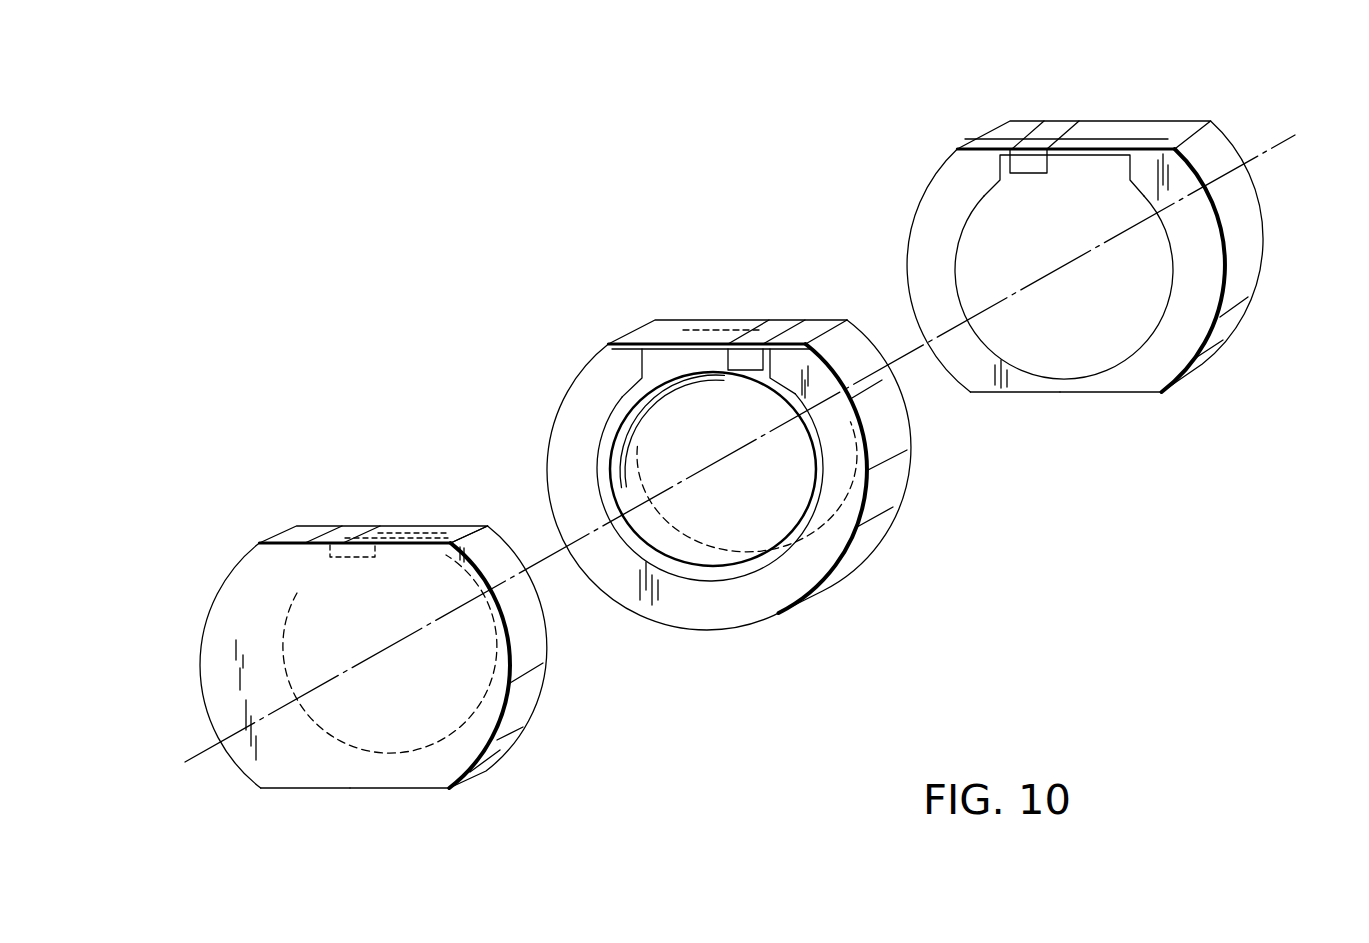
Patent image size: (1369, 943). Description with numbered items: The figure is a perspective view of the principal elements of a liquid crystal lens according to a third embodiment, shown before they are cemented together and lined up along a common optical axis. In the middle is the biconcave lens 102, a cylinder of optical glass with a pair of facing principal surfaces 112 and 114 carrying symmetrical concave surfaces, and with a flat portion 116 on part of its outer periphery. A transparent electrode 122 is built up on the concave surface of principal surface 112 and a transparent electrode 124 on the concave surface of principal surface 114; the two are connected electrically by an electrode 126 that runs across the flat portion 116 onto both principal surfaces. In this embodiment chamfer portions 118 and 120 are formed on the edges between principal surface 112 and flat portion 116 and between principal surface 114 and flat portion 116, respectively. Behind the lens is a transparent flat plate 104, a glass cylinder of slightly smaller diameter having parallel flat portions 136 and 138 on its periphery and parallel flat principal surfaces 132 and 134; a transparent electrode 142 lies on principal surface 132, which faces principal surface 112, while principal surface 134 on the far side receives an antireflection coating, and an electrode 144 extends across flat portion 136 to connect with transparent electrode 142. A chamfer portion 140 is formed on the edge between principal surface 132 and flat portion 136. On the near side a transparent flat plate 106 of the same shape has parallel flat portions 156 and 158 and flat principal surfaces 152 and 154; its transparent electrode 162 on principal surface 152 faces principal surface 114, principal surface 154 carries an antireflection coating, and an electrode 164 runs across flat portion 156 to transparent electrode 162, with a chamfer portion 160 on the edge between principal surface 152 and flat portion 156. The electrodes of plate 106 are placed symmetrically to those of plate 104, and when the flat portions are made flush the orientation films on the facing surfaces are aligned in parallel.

The biconcave lens 102 is at (850, 567).
The transparent flat plate 104 is at (1237, 319).
The transparent flat plate 106 is at (493, 748).
The principal surface 112 is at (880, 537).
The principal surface 114 is at (767, 597).
The flat portion 116 is at (672, 326).
The chamfer portion 118 is at (861, 321).
The chamfer portion 120 is at (626, 341).
The transparent electrode 122 is at (857, 442).
The transparent electrode 124 is at (620, 393).
The electrode 126 is at (780, 320).
The principal surface 132 is at (1140, 378).
The principal surface 134 is at (1265, 229).
The flat portion 136 is at (1112, 130).
The flat portion 138 is at (1043, 393).
The chamfer portion 140 is at (990, 146).
The transparent electrode 142 is at (993, 217).
The electrode 144 is at (1053, 140).
The principal surface 152 is at (523, 728).
The principal surface 154 is at (423, 782).
The flat portion 156 is at (303, 529).
The flat portion 158 is at (313, 790).
The chamfer portion 160 is at (490, 531).
The transparent electrode 162 is at (297, 593).
The electrode 164 is at (347, 529).